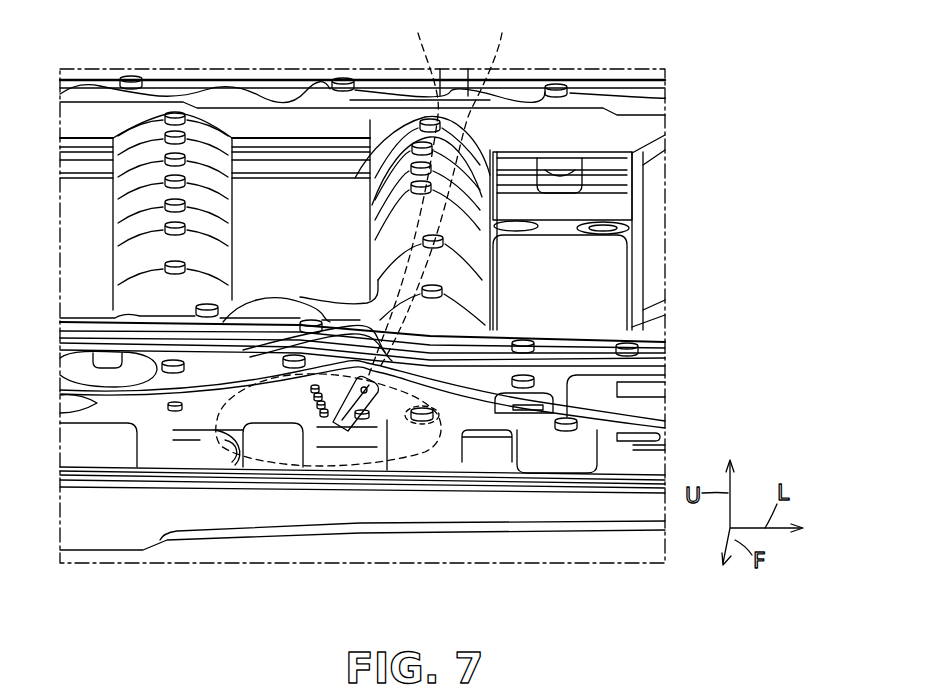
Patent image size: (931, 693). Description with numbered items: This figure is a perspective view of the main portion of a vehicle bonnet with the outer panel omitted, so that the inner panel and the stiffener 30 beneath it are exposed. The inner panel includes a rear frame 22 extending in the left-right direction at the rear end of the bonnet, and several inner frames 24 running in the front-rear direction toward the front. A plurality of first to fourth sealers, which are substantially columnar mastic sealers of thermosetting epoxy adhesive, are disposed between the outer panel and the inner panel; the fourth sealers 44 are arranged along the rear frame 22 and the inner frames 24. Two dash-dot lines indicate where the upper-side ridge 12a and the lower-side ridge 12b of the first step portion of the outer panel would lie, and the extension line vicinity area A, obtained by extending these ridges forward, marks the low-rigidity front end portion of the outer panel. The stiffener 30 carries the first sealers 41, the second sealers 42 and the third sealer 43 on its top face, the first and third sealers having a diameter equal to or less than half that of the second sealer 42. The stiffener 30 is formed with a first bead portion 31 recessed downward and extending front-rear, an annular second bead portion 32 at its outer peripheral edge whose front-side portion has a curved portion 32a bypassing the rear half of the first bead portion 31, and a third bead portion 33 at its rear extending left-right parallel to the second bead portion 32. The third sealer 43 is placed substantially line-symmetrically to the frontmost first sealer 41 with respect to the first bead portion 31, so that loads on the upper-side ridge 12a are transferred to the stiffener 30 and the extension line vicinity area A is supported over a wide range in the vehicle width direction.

The rear frame 22 is at (247, 95).
The inner frame 24 is at (213, 203).
The fourth sealer 44 is at (131, 77).
The upper-side ridge 12a is at (405, 195).
The lower-side ridge 12b is at (452, 188).
The curved portion 32a is at (340, 366).
The second sealer 42 is at (308, 322).
The second bead portion 32 is at (113, 397).
The third bead portion 33 is at (503, 360).
The stiffener 30 is at (103, 430).
The extension line vicinity area A is at (263, 465).
The first sealer 41 is at (308, 387).
The first bead portion 31 is at (366, 398).
The third sealer 43 is at (363, 421).